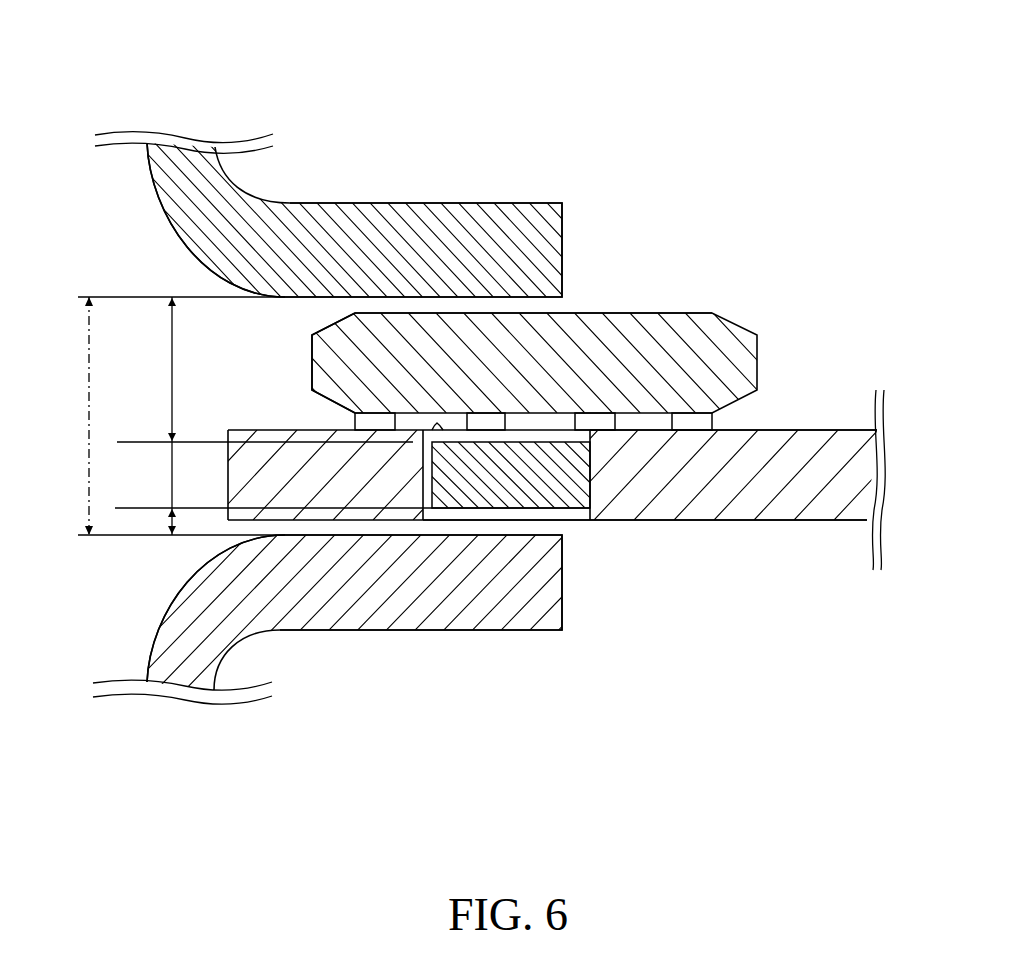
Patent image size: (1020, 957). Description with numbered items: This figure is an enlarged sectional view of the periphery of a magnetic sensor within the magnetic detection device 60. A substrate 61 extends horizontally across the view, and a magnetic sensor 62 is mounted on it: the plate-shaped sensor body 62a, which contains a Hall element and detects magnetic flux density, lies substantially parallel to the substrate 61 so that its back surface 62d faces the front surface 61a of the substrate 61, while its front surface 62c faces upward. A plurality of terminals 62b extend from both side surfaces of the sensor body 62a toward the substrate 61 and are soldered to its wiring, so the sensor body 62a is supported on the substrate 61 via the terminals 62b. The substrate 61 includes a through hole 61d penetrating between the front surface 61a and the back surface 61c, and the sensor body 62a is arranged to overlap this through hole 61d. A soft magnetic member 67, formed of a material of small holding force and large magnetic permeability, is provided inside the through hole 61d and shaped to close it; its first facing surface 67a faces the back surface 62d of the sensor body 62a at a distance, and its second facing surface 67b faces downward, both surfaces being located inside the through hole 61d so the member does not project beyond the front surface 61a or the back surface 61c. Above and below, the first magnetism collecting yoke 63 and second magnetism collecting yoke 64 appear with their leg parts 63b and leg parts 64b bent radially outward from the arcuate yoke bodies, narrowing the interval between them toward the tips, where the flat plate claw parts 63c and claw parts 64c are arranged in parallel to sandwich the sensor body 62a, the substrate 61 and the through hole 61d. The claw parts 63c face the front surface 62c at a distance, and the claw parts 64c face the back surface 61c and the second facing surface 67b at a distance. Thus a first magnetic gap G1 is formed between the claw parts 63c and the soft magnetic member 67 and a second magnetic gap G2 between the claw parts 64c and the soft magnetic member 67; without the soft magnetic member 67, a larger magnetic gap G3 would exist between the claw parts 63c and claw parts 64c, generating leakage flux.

The magnetic detection device 60 is at (710, 100).
The substrate 61 is at (845, 430).
The front surface of the substrate 61a is at (807, 430).
The back surface of the substrate 61c is at (807, 521).
The through hole 61d is at (590, 508).
The magnetic sensor 62 is at (712, 313).
The sensor body 62a is at (670, 330).
The terminals 62b is at (690, 414).
The front surface of the sensor body 62c is at (605, 313).
The back surface of the sensor body 62d is at (628, 414).
The first magnetism collecting yoke 63 is at (312, 203).
The leg parts of the first magnetism collecting yoke 63b is at (175, 170).
The claw parts of the first magnetism collecting yoke 63c is at (480, 247).
The second magnetism collecting yoke 64 is at (310, 633).
The leg parts of the second magnetism collecting yoke 64b is at (173, 665).
The claw parts of the second magnetism collecting yoke 64c is at (548, 582).
The soft magnetic member 67 is at (506, 497).
The first facing surface 67a is at (437, 423).
The second facing surface 67b is at (473, 508).
The first magnetic gap G1 is at (172, 325).
The second magnetic gap G2 is at (172, 523).
The magnetic gap G3 is at (80, 328).